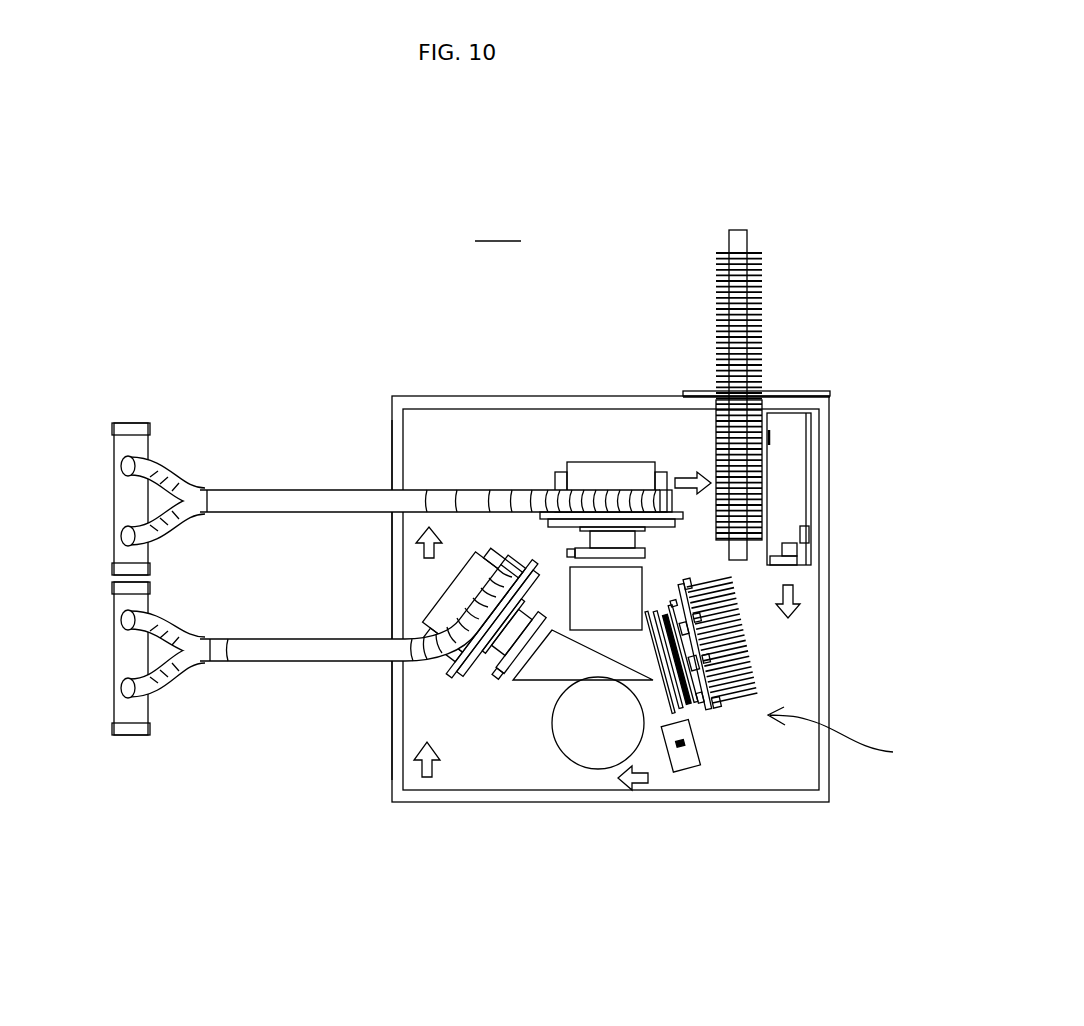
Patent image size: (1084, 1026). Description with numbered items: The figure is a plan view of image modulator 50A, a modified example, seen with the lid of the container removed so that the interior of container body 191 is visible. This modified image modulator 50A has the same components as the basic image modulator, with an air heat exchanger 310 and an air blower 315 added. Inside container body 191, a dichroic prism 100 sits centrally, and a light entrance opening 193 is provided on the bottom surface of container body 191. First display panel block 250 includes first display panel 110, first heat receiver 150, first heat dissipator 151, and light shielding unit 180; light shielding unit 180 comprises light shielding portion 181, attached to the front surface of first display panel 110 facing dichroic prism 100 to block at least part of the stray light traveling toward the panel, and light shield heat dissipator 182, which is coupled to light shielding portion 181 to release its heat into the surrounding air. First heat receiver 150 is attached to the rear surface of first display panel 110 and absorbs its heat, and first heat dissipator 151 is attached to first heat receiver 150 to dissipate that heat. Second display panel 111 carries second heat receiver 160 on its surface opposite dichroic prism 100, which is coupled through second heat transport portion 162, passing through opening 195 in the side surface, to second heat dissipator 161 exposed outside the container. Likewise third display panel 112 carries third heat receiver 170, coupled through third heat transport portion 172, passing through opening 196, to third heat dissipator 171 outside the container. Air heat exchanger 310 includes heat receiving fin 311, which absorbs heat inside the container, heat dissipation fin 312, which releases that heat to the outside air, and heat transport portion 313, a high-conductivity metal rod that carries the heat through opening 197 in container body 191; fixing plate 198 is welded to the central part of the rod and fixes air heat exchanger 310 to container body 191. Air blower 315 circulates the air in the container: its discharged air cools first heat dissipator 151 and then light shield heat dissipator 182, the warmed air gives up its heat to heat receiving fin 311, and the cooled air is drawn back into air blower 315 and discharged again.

The image modulator 50A is at (566, 586).
The dichroic prism 100 is at (623, 598).
The first display panel 110 is at (685, 668).
The second display panel 111 is at (645, 549).
The third display panel 112 is at (506, 658).
The first heat receiver 150 is at (733, 663).
The first heat dissipator 151 is at (740, 657).
The second heat receiver 160 is at (607, 473).
The second heat dissipator 161 is at (123, 515).
The second heat transport portion 162 is at (297, 500).
The third heat receiver 170 is at (467, 592).
The third heat dissipator 171 is at (120, 670).
The third heat transport portion 172 is at (292, 657).
The light shielding unit 180 is at (737, 877).
The light shielding portion 181 is at (663, 672).
The light shield heat dissipator 182 is at (685, 762).
The container body 191 is at (405, 803).
The light entrance opening 193 is at (583, 752).
The opening 195 is at (392, 483).
The opening 196 is at (403, 660).
The opening 197 is at (750, 393).
The fixing plate 198 is at (793, 395).
The first display panel block 250 is at (854, 737).
The air heat exchanger 310 is at (634, 376).
The heat receiving fin 311 is at (720, 410).
The heat dissipation fin 312 is at (722, 318).
The heat transport portion 313 is at (722, 385).
The air blower 315 is at (788, 483).